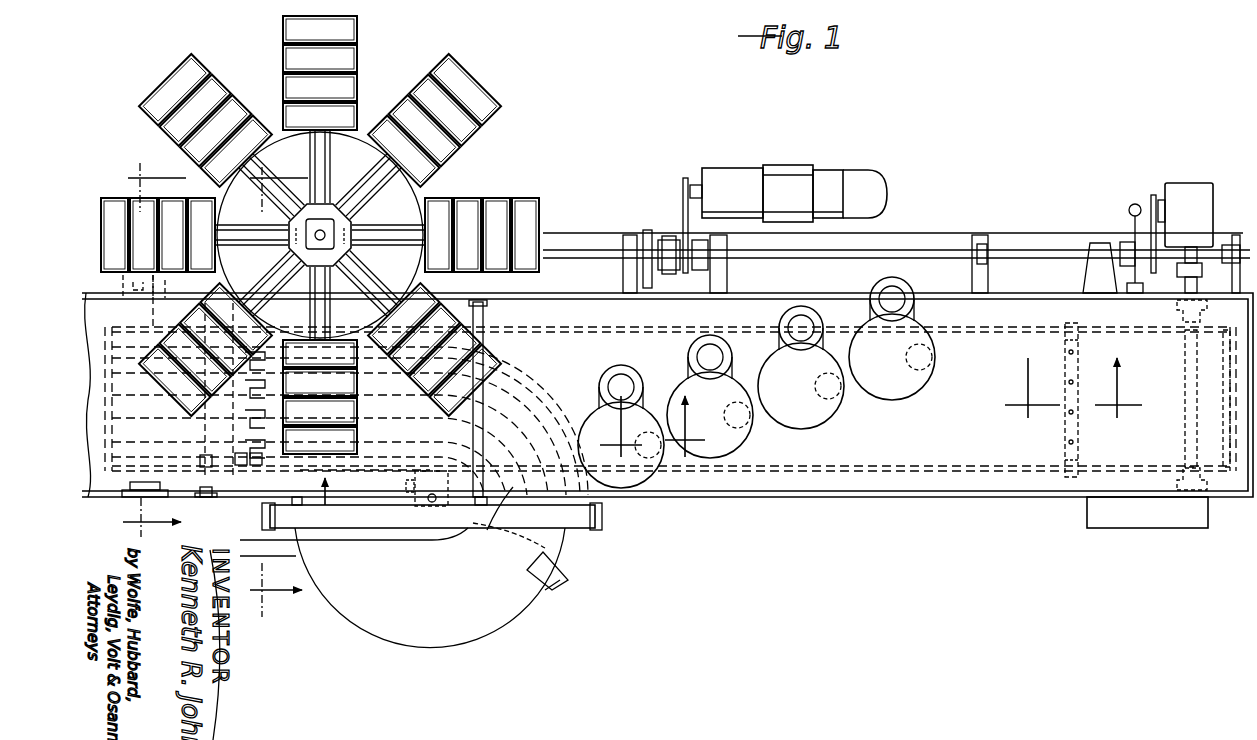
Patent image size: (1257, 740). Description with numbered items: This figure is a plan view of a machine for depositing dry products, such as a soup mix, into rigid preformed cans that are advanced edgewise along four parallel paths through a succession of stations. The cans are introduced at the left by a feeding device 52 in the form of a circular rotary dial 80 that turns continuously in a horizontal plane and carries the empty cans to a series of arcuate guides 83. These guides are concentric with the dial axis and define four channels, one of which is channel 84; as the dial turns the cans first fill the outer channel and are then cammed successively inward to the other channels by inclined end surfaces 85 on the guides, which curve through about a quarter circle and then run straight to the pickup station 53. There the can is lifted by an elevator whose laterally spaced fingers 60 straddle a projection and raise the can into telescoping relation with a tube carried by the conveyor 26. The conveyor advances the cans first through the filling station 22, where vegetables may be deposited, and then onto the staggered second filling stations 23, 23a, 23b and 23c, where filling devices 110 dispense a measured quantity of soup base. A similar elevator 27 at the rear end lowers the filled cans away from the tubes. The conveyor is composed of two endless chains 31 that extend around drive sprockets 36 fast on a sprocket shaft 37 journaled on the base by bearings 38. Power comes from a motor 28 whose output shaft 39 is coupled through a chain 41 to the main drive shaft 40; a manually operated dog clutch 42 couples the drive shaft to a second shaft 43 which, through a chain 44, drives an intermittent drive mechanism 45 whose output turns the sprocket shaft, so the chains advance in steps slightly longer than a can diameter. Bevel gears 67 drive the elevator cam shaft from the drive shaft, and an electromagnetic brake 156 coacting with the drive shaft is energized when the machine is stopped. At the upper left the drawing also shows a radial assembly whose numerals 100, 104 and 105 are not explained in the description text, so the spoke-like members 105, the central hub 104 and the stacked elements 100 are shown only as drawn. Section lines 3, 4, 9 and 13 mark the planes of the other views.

The section line 3- 3 is at (164, 350).
The section line 4- 4 is at (651, 426).
The section line 9- 9 is at (284, 384).
The section line 13- 13 is at (1071, 388).
The filling station 22 is at (421, 428).
The second filling station 23 is at (632, 490).
The second filling station 23a is at (726, 458).
The second filling station 23b is at (822, 418).
The second filling station 23c is at (916, 385).
The conveyor 26 is at (98, 338).
The elevator 27 is at (1062, 420).
The motor 28 is at (855, 172).
The endless chains 31 is at (1000, 472).
The drive sprockets 36 is at (1185, 466).
The sprocket shaft 37 is at (1183, 438).
The bearings 38 is at (1205, 480).
The output shaft 39 is at (697, 184).
The drive shaft 40 is at (917, 250).
The chain 41 is at (683, 215).
The dog clutch 42 is at (1126, 244).
The second shaft 43 is at (1170, 258).
The chain 44 is at (1150, 205).
The intermittent drive mechanism 45 is at (1200, 192).
The feeding device 52 is at (536, 618).
The pickup station 53 is at (254, 492).
The fingers 60 is at (275, 418).
The bevel gears 67 is at (200, 276).
The rotary dial 80 is at (383, 615).
The arcuate guides 83 is at (552, 575).
The channel 84 is at (528, 578).
The inclined end surfaces 85 is at (517, 600).
The tray magazines 100 is at (385, 118).
The hub 104 is at (320, 235).
The spoke 105 is at (345, 188).
The filling devices 110 is at (820, 345).
The electromagnetic brake 156 is at (648, 232).